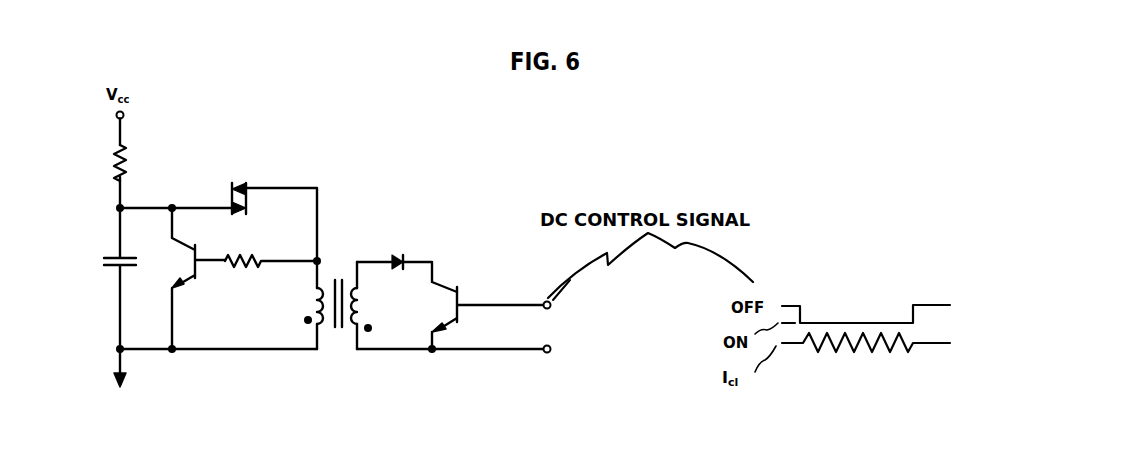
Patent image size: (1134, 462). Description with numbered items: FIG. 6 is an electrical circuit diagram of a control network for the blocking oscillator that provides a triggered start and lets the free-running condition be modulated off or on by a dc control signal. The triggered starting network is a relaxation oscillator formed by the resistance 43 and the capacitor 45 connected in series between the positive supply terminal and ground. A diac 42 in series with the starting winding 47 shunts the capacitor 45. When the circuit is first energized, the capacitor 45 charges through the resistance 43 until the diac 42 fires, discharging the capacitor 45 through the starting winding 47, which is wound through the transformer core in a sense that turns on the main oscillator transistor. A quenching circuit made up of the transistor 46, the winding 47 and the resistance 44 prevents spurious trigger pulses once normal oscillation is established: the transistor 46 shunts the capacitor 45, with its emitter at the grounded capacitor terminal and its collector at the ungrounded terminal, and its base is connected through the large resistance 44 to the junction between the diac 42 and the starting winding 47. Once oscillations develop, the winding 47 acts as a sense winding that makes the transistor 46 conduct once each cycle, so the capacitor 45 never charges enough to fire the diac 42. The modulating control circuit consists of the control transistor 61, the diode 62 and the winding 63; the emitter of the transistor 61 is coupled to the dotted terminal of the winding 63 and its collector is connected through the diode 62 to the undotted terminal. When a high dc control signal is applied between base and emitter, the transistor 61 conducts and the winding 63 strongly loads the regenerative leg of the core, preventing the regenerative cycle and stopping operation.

The diac 42 is at (249, 202).
The resistance 43 is at (117, 151).
The resistance 44 is at (255, 259).
The capacitor 45 is at (115, 270).
The transistor 46 is at (180, 244).
The starting winding 47 is at (317, 289).
The control transistor 61 is at (461, 290).
The diode 62 is at (410, 254).
The winding 63 is at (345, 276).